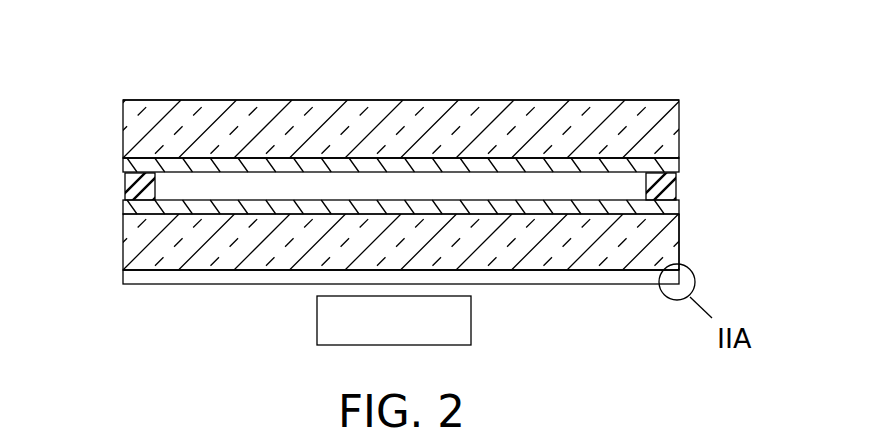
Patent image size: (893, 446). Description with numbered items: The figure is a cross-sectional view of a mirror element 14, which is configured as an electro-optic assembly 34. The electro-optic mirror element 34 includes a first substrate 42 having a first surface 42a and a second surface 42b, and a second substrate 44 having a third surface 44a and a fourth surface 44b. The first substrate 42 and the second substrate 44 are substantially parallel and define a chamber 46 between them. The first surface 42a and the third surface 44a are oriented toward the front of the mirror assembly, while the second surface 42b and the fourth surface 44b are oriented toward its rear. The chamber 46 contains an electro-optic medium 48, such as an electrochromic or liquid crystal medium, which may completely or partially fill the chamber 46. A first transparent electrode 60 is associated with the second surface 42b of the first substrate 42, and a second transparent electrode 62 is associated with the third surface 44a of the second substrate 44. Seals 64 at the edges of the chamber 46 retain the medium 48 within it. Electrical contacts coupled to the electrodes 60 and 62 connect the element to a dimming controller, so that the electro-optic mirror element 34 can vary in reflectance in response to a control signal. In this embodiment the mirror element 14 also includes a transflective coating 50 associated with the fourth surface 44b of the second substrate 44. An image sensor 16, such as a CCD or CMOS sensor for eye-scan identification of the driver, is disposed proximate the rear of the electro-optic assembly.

The mirror element 14 is at (402, 44).
The image sensor 16 is at (471, 310).
The electro-optic assembly 34 is at (153, 60).
The first substrate 42 is at (568, 120).
The first surface 42a is at (613, 101).
The second surface 42b is at (125, 163).
The second substrate 44 is at (180, 257).
The third surface 44a is at (653, 232).
The fourth surface 44b is at (313, 272).
The chamber 46 is at (308, 187).
The electro-optic medium 48 is at (388, 190).
The transflective coating 50 is at (137, 278).
The first transparent electrode 60 is at (125, 172).
The second transparent electrode 62 is at (670, 206).
The seals 64 is at (127, 188).